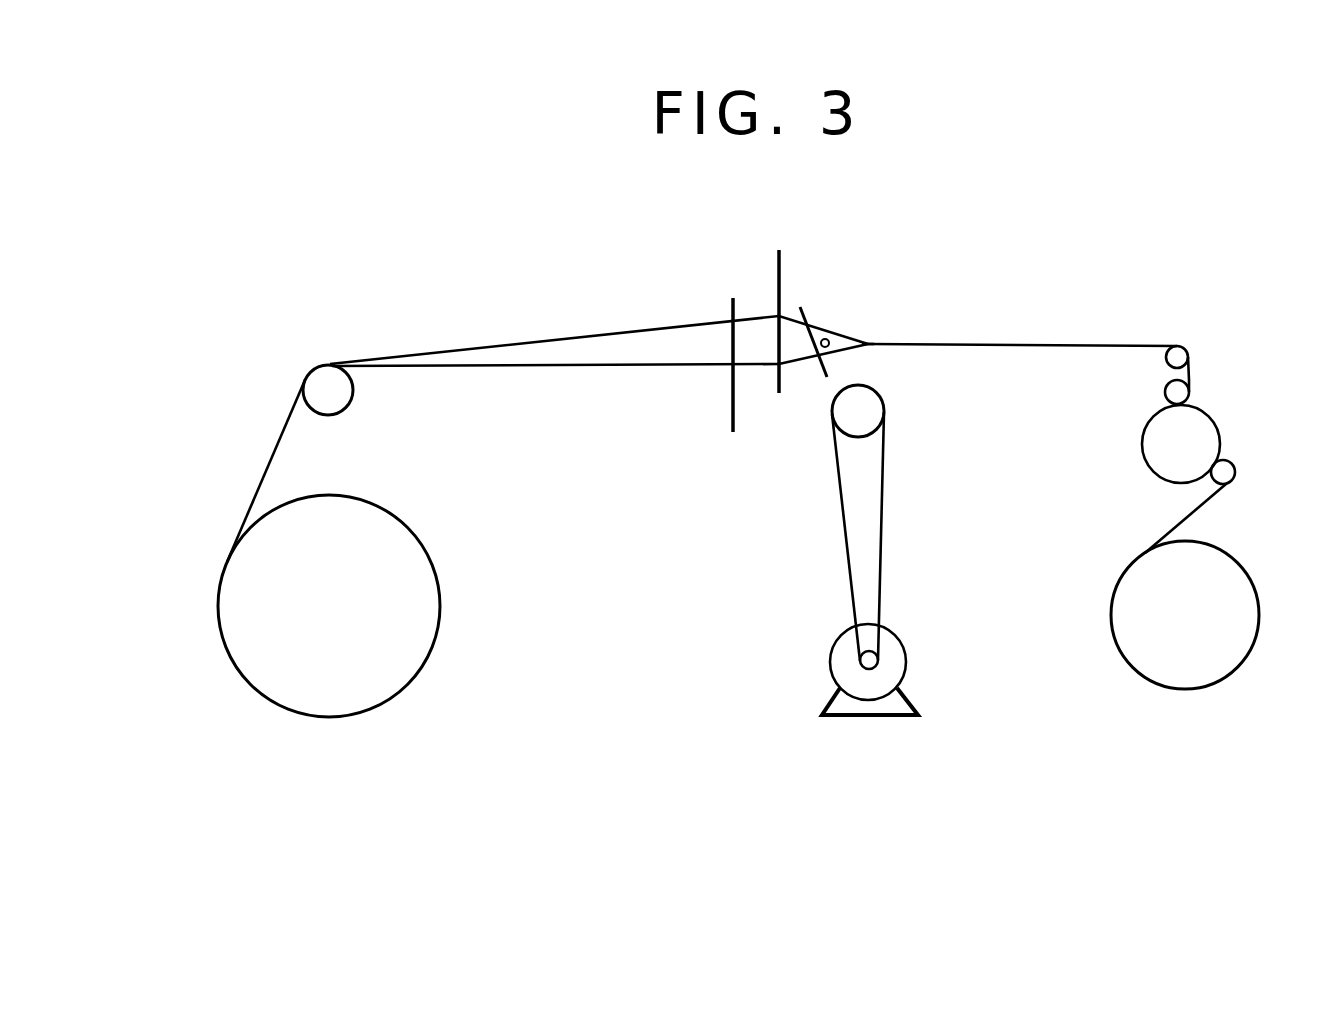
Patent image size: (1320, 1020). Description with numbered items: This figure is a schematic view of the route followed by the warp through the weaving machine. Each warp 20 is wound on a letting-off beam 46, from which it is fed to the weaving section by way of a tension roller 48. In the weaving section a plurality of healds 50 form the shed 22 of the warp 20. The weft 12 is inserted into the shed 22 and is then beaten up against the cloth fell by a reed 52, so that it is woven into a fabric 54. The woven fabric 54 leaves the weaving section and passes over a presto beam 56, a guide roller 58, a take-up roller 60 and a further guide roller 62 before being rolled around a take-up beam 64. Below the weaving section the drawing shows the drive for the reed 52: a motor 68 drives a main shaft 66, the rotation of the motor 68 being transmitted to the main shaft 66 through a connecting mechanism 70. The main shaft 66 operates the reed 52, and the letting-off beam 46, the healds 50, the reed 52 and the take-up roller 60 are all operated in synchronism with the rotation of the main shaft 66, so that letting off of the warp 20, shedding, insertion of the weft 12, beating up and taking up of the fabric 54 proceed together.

The weft 12 is at (827, 338).
The warp 20 is at (284, 432).
The shed 22 is at (846, 345).
The letting-off beam 46 is at (440, 614).
The tension roller 48 is at (325, 375).
The healds 50 is at (781, 275).
The reed 52 is at (807, 312).
The fabric 54 is at (1058, 345).
The presto beam 56 is at (1178, 350).
The guide roller 58 is at (1165, 392).
The take-up roller 60 is at (1196, 428).
The guide roller 62 is at (1229, 464).
The take-up beam 64 is at (1146, 573).
The main shaft 66 is at (878, 411).
The motor 68 is at (900, 660).
The connecting mechanism 70 is at (882, 537).